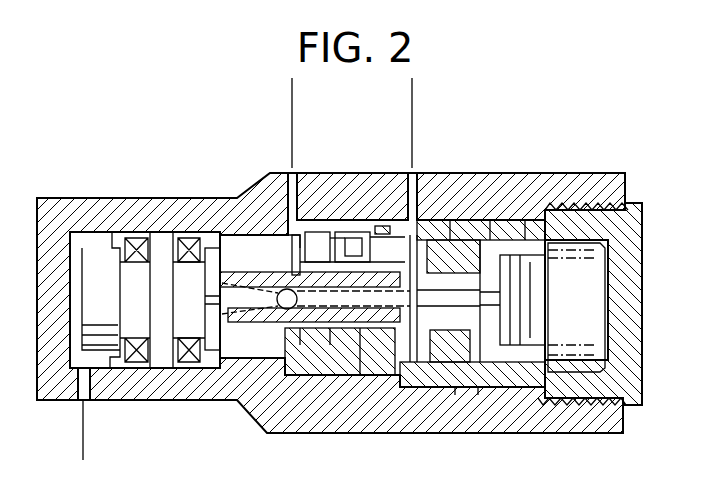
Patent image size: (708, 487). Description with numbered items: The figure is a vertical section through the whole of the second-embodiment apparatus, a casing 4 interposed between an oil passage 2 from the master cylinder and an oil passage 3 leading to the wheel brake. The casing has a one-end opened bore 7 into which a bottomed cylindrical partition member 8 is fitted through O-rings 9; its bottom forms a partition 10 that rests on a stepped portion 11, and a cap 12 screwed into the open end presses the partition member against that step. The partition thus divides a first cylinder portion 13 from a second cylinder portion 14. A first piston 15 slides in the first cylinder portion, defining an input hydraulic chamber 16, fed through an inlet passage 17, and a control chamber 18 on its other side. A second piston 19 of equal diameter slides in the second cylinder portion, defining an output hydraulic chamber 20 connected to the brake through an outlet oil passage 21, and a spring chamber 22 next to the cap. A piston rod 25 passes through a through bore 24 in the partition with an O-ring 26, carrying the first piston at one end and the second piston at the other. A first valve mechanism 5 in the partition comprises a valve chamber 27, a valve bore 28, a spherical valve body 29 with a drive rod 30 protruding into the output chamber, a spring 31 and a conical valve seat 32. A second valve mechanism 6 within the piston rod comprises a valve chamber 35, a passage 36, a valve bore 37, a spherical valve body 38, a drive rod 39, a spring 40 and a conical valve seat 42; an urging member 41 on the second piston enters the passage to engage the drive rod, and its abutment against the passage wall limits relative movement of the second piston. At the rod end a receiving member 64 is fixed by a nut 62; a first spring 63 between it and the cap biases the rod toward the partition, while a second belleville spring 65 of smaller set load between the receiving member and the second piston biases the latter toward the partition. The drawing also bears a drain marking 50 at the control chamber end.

The oil passage 2 is at (292, 117).
The oil passage 3 is at (412, 117).
The casing 4 is at (170, 200).
The first valve mechanism 5 is at (297, 248).
The second valve mechanism 6 is at (222, 291).
The bore 7 is at (455, 403).
The partition member 8 is at (478, 403).
The O-rings 9 is at (451, 401).
The partition 10 is at (342, 394).
The stepped portion 11 is at (281, 377).
The cap 12 is at (643, 363).
The first cylinder portion 13 is at (212, 368).
The second cylinder portion 14 is at (487, 212).
The first piston 15 is at (163, 368).
The input hydraulic chamber 16 is at (221, 240).
The inlet passage 17 is at (289, 177).
The control chamber 18 is at (94, 240).
The second piston 19 is at (461, 212).
The output hydraulic chamber 20 is at (480, 212).
The outlet oil passage 21 is at (407, 178).
The spring chamber 22 is at (566, 292).
The through bore 24 is at (340, 352).
The piston rod 25 is at (458, 301).
The O-ring 26 is at (372, 351).
The valve chamber 27 is at (348, 224).
The valve bore 28 is at (366, 226).
The valve body 29 is at (352, 229).
The drive rod 30 is at (390, 226).
The spring 31 is at (312, 228).
The valve seat 32 is at (310, 297).
The valve chamber 35 is at (212, 306).
The passage 36 is at (446, 311).
The valve bore 37 is at (341, 335).
The valve body 38 is at (280, 255).
The drive rod 39 is at (306, 335).
The spring 40 is at (248, 318).
The urging member 41 is at (428, 298).
The valve seat 42 is at (283, 311).
The drain passage 50 is at (83, 441).
The nut 62 is at (546, 318).
The first spring 63 is at (572, 362).
The receiving member 64 is at (515, 211).
The second belleville spring 65 is at (472, 358).